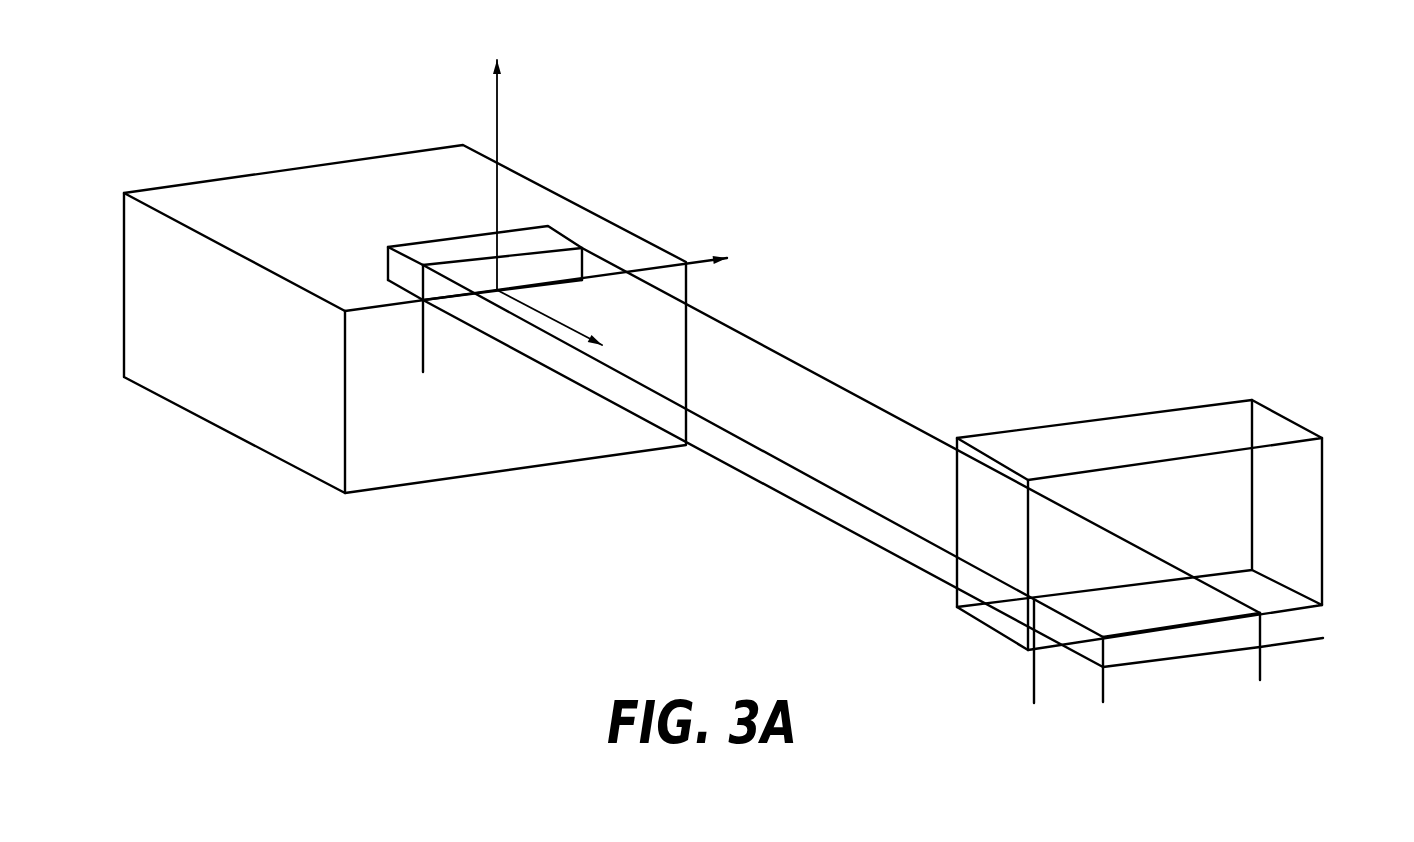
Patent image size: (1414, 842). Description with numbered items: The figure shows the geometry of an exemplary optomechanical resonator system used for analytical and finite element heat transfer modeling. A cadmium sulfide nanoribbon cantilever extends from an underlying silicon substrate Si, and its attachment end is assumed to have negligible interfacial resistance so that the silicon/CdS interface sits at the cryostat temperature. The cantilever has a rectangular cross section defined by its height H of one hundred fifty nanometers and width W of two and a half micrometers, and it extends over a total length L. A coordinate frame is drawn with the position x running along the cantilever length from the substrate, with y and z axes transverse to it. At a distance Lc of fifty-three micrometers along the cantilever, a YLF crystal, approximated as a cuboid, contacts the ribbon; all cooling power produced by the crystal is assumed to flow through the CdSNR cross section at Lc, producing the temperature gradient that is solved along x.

The silicon substrate Si is at (405, 319).
The cantilever width W is at (1260, 668).
The cantilever height H is at (1310, 545).
The cantilever length L is at (1100, 683).
The crystal position along cantilever Lc is at (1032, 687).
The position along cantilever x is at (577, 342).
The y axis y is at (560, 245).
The z axis z is at (530, 147).